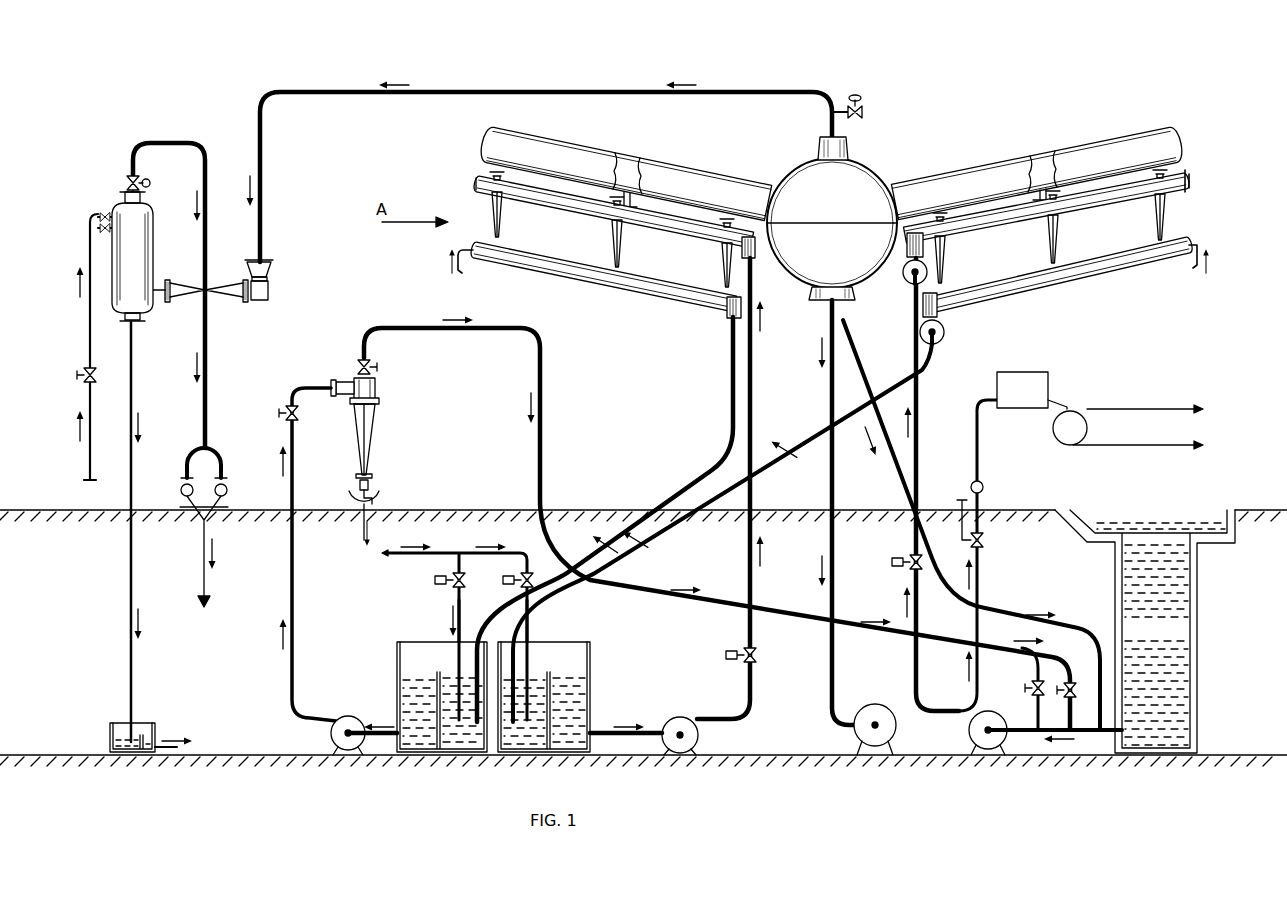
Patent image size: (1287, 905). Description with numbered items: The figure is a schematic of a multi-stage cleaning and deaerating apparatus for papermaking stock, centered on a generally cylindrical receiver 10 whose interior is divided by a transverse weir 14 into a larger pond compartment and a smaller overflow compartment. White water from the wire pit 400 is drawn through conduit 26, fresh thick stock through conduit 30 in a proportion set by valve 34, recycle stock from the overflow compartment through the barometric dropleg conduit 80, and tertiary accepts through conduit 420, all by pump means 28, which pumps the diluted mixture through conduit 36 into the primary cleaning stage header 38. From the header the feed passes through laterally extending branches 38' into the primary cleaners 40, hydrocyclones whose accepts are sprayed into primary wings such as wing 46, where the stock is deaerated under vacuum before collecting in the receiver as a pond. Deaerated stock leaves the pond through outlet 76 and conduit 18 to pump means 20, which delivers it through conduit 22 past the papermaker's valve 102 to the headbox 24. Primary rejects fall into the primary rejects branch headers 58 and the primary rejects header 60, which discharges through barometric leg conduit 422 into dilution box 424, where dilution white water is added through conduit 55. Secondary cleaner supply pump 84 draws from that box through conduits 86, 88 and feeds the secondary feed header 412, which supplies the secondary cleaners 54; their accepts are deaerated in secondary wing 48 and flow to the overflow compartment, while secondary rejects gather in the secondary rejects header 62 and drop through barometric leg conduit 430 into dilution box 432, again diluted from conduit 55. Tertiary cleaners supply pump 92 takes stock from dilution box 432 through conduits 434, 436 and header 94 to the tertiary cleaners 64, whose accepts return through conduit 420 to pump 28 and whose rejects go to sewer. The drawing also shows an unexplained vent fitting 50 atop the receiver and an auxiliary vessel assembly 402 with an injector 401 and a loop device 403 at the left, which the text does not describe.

The receiver 10 is at (803, 163).
The weir 14 is at (812, 223).
The conduit 18 is at (830, 390).
The pump means 20 is at (853, 737).
The conduit 22 is at (984, 488).
The headbox 24 is at (1038, 372).
The conduit 26 is at (1043, 734).
The pump means 28 is at (969, 735).
The conduit 30 is at (1033, 703).
The valve 34 is at (1033, 677).
The conduit 36 is at (913, 664).
The primary cleaning stage header 38 is at (899, 280).
The laterally extending branches 38' is at (1203, 174).
The cleaners 40 is at (947, 258).
The primary wing 46 is at (993, 157).
The secondary wing 48 is at (606, 140).
The vent valve 50 is at (830, 121).
The secondary cleaners 54 is at (498, 223).
The conduit 55 is at (412, 556).
The primary rejects branch headers 58 is at (1032, 286).
The primary rejects header 60 is at (945, 333).
The secondary rejects header 62 is at (634, 290).
The tertiary cleaners 64 is at (376, 420).
The outlet 76 is at (815, 302).
The conduit 80 is at (862, 368).
The secondary cleaner supply pump 84 is at (699, 735).
The conduit 86 is at (628, 738).
The conduit 88 is at (753, 626).
The tertiary cleaners supply pump 92 is at (330, 728).
The header 94 is at (340, 380).
The papermaker's valve 102 is at (985, 545).
The wire pit 400 is at (1177, 635).
The injector 401 is at (256, 303).
The vessel 402 is at (154, 262).
The pump 403 is at (229, 480).
The secondary feed header 412 is at (549, 207).
The conduit 420 is at (715, 604).
The barometric leg conduit 422 is at (672, 538).
The dilution box 424 is at (567, 667).
The barometric leg conduit 430 is at (698, 485).
The dilution box 432 is at (439, 667).
The conduit 434 is at (382, 738).
The conduit 436 is at (298, 668).